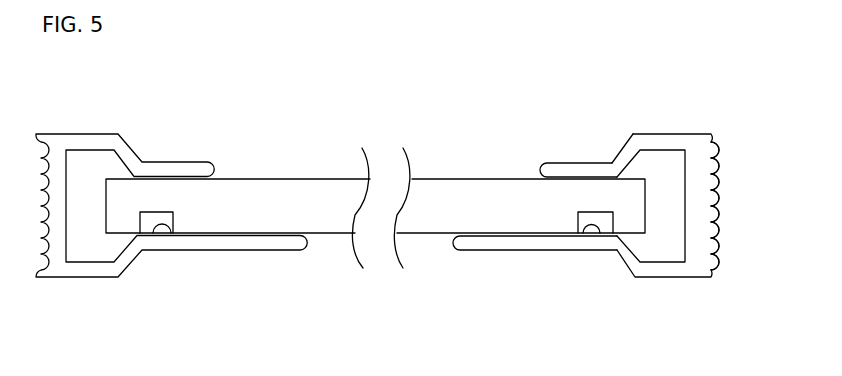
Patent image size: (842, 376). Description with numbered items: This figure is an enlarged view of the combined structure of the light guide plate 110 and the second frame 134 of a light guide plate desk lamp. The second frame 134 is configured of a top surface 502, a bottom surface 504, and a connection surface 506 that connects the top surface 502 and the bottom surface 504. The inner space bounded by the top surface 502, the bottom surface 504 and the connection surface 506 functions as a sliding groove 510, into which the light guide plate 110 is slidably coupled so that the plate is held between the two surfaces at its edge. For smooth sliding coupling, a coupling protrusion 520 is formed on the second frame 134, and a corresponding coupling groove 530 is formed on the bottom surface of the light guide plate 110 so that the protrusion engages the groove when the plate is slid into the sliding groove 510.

The light guide plate 110 is at (467, 190).
The second frame 134 is at (665, 142).
The top surface 502 is at (568, 168).
The bottom surface 504 is at (482, 243).
The connection surface 506 is at (700, 207).
The sliding groove 510 is at (662, 236).
The coupling protrusion 520 is at (590, 234).
The coupling groove 530 is at (603, 224).